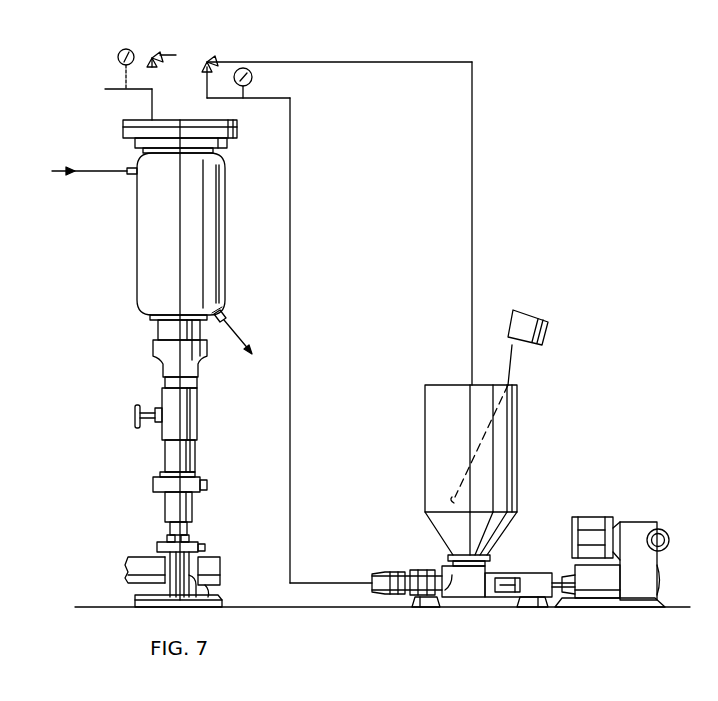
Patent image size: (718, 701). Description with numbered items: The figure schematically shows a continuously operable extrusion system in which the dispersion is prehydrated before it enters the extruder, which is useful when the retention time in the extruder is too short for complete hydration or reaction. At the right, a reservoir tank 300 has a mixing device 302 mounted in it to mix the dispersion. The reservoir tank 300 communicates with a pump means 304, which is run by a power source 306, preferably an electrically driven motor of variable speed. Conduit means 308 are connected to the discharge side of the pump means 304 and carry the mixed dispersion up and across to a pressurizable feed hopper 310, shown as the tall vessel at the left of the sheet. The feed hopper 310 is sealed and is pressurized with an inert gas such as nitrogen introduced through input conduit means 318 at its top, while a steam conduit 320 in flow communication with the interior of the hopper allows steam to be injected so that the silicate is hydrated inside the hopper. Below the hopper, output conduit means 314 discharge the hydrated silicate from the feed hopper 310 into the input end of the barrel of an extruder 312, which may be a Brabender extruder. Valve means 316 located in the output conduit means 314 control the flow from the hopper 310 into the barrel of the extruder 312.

The reservoir tank 300 is at (515, 431).
The mixing device 302 is at (543, 333).
The pump means 304 is at (493, 573).
The power source 306 is at (646, 522).
The conduit means 308 is at (299, 414).
The pressurizable feed hopper 310 is at (201, 232).
The extruder 312 is at (135, 562).
The output conduit means 314 is at (203, 360).
The valve means 316 is at (132, 408).
The input conduit means 318 is at (117, 86).
The steam conduit 320 is at (90, 175).